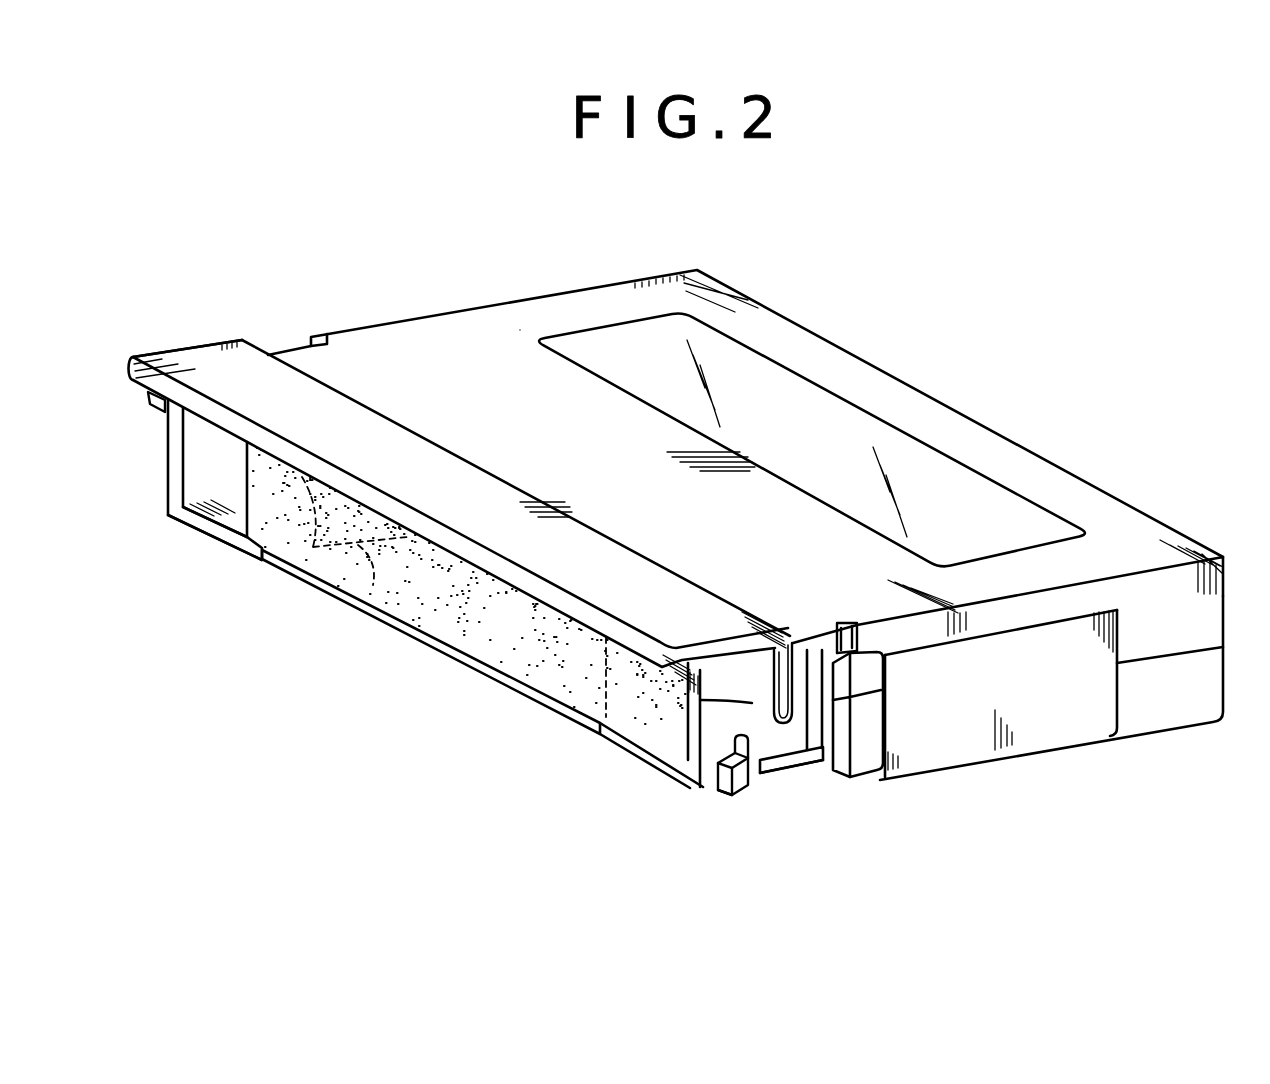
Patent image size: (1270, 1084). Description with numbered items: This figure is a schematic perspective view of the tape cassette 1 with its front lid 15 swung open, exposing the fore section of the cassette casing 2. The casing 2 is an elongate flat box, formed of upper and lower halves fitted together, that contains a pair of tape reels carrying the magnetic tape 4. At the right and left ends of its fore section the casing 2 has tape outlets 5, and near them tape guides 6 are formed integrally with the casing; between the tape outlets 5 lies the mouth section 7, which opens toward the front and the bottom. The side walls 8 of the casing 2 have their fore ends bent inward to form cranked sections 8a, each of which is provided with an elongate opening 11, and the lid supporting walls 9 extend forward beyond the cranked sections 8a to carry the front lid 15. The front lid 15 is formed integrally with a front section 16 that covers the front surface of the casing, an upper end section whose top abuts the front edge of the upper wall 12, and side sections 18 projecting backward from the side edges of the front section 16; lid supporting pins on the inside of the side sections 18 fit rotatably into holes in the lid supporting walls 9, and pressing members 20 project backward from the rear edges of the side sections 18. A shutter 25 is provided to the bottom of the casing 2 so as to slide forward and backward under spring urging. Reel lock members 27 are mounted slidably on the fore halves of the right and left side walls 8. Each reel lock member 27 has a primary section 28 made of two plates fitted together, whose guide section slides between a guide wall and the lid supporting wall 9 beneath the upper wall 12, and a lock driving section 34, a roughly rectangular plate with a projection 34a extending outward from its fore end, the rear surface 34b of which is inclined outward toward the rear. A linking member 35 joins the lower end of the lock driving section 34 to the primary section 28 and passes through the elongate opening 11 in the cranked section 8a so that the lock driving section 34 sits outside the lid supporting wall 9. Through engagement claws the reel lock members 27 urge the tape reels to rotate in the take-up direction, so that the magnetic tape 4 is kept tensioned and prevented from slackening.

The tape cassette 1 is at (431, 276).
The cassette casing 2 is at (552, 292).
The magnetic tape 4 is at (413, 627).
The tape outlets 5 is at (240, 523).
The tape guides 6 is at (300, 575).
The mouth section 7 is at (353, 600).
The side walls 8 is at (1160, 697).
The cranked sections 8a is at (852, 632).
The lid supporting walls 9 is at (172, 455).
The elongate openings 11 is at (835, 712).
The upper wall 12 is at (492, 345).
The front lid 15 is at (198, 355).
The front section 16 is at (445, 478).
The side sections 18 is at (152, 410).
The pressing members 20 is at (753, 703).
The shutter 25 is at (970, 735).
The reel lock members 27 is at (835, 648).
The primary section 28 is at (843, 634).
The lock driving section 34 is at (723, 790).
The projection 34a is at (743, 787).
The rear surface 34b is at (685, 783).
The linking member 35 is at (788, 772).